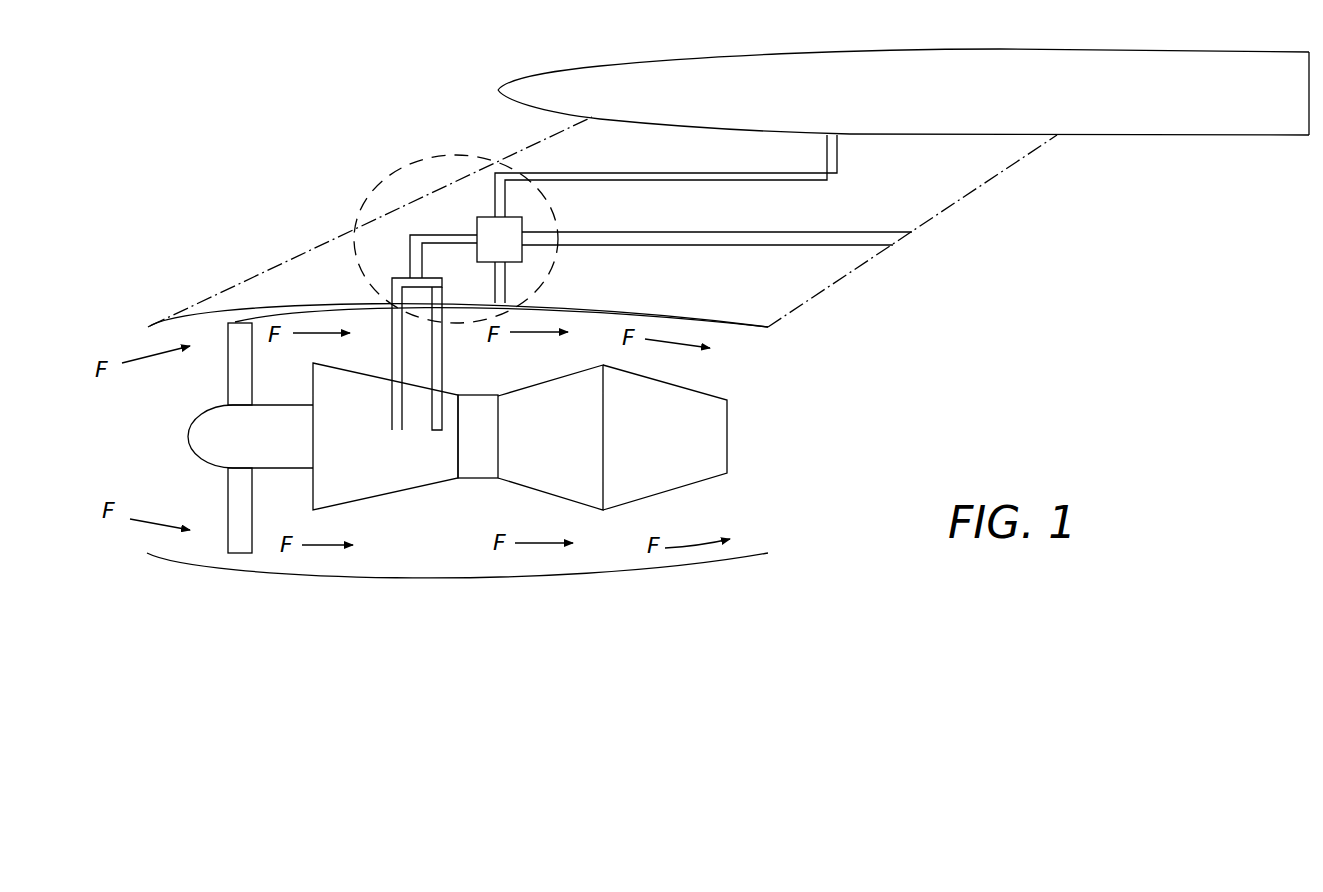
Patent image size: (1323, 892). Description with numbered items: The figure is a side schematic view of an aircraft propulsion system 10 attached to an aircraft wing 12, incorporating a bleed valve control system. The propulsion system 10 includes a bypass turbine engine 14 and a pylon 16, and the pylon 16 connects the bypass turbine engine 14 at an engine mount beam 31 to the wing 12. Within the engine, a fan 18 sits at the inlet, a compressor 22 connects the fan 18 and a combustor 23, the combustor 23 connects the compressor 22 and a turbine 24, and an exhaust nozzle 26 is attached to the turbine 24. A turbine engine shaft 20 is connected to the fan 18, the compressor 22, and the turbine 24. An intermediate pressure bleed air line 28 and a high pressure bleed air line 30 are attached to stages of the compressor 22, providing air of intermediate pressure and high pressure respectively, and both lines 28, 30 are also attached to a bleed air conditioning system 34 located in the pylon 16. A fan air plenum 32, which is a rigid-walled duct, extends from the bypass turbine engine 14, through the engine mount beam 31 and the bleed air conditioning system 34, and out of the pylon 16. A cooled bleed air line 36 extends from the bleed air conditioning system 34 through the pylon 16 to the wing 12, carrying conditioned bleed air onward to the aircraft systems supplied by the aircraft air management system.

The aircraft propulsion system 10 is at (255, 116).
The aircraft wing 12 is at (640, 61).
The bypass turbine engine 14 is at (234, 575).
The pylon 16 is at (528, 142).
The fan 18 is at (232, 371).
The turbine engine shaft 20 is at (188, 440).
The compressor 22 is at (427, 487).
The combustor 23 is at (484, 480).
The turbine 24 is at (549, 492).
The exhaust nozzle 26 is at (658, 493).
The intermediate pressure bleed air line 28 is at (383, 404).
The high pressure bleed air line 30 is at (427, 415).
The engine mount beam 31 is at (303, 300).
The fan air plenum 32 is at (507, 278).
The bleed air conditioning system 34 is at (360, 192).
The cooled bleed air line 36 is at (723, 182).